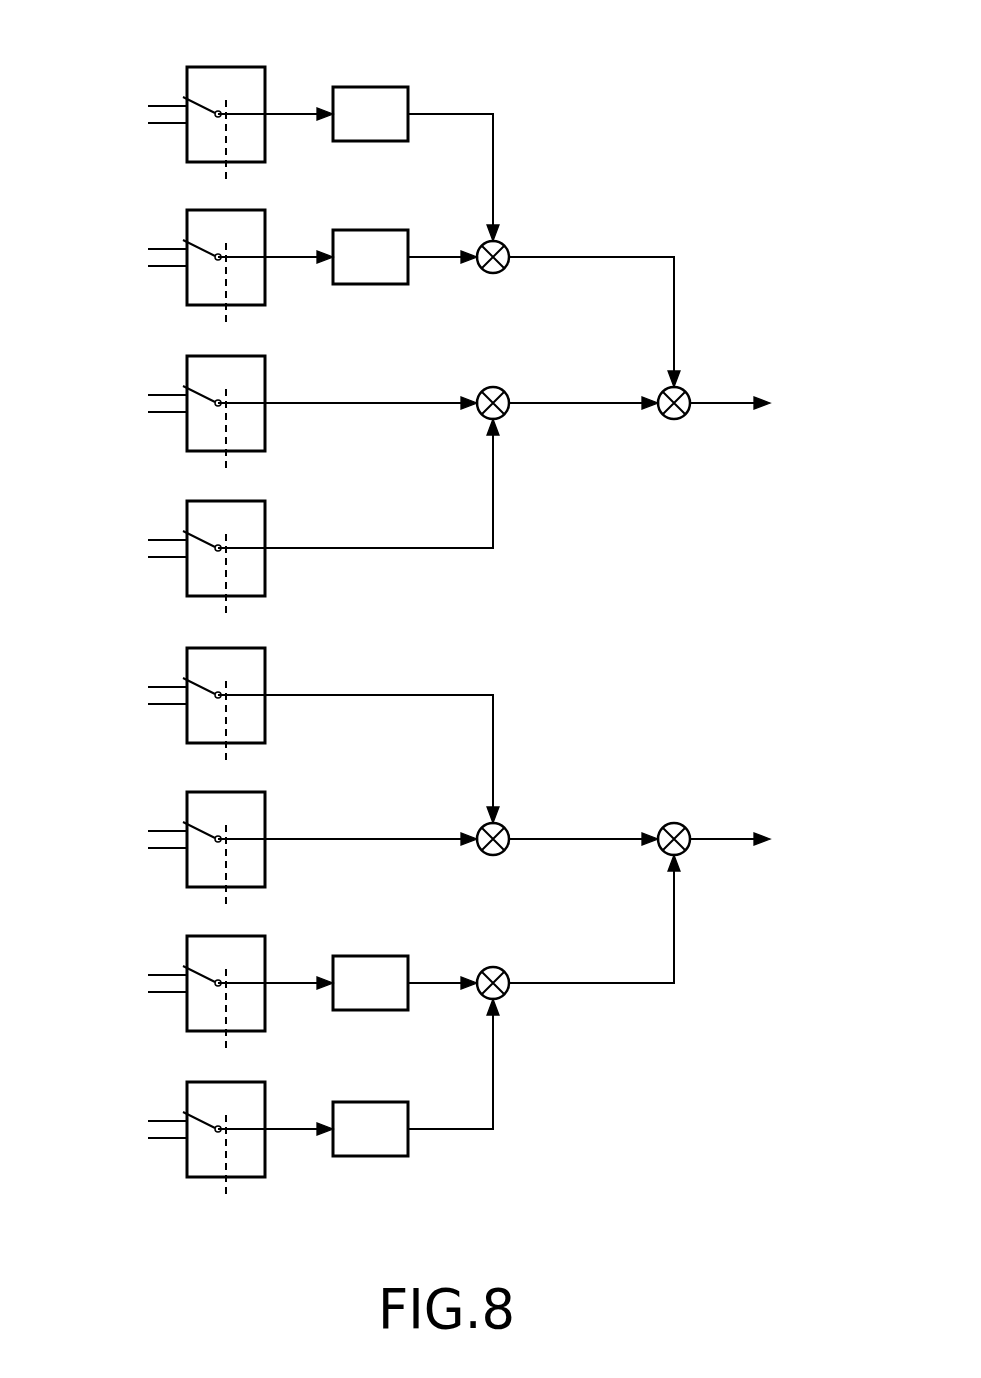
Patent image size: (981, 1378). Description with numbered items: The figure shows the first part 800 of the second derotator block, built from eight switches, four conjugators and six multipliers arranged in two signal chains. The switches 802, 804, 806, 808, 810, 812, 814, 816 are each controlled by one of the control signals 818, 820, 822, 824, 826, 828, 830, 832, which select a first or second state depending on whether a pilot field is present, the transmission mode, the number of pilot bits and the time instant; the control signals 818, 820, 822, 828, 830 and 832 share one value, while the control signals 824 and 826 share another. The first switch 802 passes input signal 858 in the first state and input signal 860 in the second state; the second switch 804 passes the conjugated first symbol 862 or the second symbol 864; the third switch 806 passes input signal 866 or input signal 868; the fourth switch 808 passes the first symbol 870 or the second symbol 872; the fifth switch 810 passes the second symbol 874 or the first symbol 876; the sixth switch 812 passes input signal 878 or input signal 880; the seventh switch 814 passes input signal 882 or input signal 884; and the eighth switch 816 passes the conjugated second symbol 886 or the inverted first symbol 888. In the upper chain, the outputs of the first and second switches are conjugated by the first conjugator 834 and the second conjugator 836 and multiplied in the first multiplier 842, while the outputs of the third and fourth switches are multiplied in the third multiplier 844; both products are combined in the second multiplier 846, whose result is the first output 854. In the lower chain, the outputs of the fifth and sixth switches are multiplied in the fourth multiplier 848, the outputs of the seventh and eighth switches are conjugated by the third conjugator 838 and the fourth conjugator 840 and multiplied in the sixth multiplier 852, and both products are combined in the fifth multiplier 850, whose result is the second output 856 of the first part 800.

The first part of the second derotator block 800 is at (623, 90).
The first switch 802 is at (190, 67).
The second switch 804 is at (190, 210).
The third switch 806 is at (190, 356).
The fourth switch 808 is at (190, 501).
The fifth switch 810 is at (190, 648).
The sixth switch 812 is at (190, 792).
The seventh switch 814 is at (190, 936).
The eighth switch 816 is at (190, 1082).
The control signal 818 is at (228, 174).
The control signal 820 is at (228, 317).
The control signal 822 is at (228, 463).
The control signal 824 is at (228, 608).
The control signal 826 is at (228, 755).
The control signal 828 is at (228, 899).
The control signal 830 is at (228, 1043).
The control signal 832 is at (228, 1189).
The first conjugator 834 is at (383, 87).
The second conjugator 836 is at (383, 230).
The third conjugator 838 is at (383, 956).
The fourth conjugator 840 is at (383, 1102).
The first multiplier 842 is at (499, 270).
The third multiplier 844 is at (488, 386).
The second multiplier 846 is at (675, 420).
The fourth multiplier 848 is at (498, 853).
The fifth multiplier 850 is at (667, 824).
The sixth multiplier 852 is at (488, 968).
The first output 854 is at (735, 405).
The second output 856 is at (743, 832).
The input signal 858 is at (148, 106).
The input signal 860 is at (148, 123).
The conjugated first symbol 862 is at (148, 249).
The second symbol 864 is at (148, 266).
The input signal 866 is at (148, 395).
The input signal 868 is at (148, 412).
The first symbol 870 is at (148, 540).
The second symbol 872 is at (148, 557).
The second symbol 874 is at (148, 687).
The first symbol 876 is at (148, 704).
The input signal 878 is at (148, 831).
The input signal 880 is at (148, 848).
The input signal 882 is at (148, 975).
The input signal 884 is at (148, 992).
The conjugated second symbol 886 is at (148, 1121).
The inverted first symbol 888 is at (148, 1138).